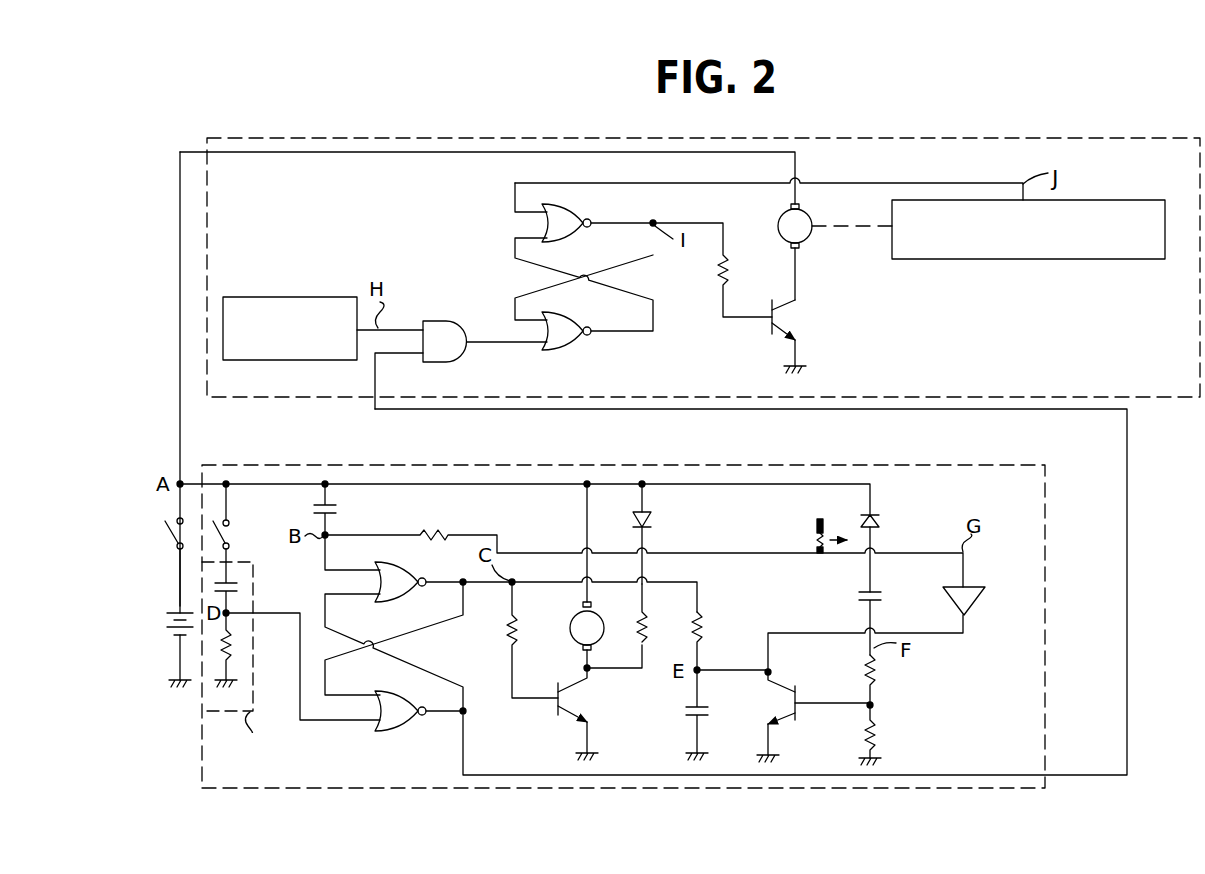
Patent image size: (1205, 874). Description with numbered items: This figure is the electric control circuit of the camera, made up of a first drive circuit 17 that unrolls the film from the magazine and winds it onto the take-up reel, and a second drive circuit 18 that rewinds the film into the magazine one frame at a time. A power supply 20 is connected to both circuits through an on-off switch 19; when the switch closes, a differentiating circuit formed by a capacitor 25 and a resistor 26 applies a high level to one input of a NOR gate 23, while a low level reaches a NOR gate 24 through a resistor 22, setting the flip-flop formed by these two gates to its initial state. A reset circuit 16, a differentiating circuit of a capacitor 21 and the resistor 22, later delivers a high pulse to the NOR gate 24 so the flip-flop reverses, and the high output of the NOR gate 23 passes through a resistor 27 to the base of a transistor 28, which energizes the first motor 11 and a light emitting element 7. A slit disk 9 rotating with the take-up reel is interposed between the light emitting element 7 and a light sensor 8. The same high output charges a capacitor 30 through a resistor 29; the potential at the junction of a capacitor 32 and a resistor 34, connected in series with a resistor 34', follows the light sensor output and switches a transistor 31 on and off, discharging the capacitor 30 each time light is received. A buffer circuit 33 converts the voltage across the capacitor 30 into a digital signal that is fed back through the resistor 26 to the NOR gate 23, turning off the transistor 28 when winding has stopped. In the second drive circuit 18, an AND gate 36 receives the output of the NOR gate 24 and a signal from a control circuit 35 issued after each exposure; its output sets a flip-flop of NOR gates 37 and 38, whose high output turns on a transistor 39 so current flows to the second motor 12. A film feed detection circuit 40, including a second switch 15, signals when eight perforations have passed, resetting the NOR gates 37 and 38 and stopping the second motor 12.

The light emitting element 7 is at (652, 522).
The light sensor 8 is at (880, 521).
The slit disk 9 is at (818, 529).
The first motor 11 is at (570, 620).
The second motor 12 is at (778, 220).
The second switch 15 is at (236, 531).
The reset circuit 16 is at (210, 712).
The first drive circuit 17 is at (210, 465).
The second drive circuit 18 is at (205, 138).
The on-off switch 19 is at (164, 537).
The power supply 20 is at (167, 622).
The capacitor 21 is at (240, 591).
The resistor 22 is at (238, 646).
The NOR gate 23 is at (407, 568).
The NOR gate 24 is at (392, 733).
The capacitor 25 is at (337, 509).
The resistor 26 is at (436, 530).
The resistor 27 is at (506, 632).
The transistor 28 is at (573, 702).
The resistor 29 is at (708, 628).
The capacitor 30 is at (685, 712).
The transistor 31 is at (788, 705).
The capacitor 32 is at (856, 597).
The buffer circuit 33 is at (978, 596).
The resistor 34 is at (904, 680).
The resistor 34' is at (904, 735).
The control circuit 35 is at (290, 297).
The AND gate 36 is at (440, 321).
The NOR gate 37 is at (572, 215).
The NOR gate 38 is at (573, 343).
The transistor 39 is at (786, 318).
The film feed detection circuit 40 is at (1090, 259).